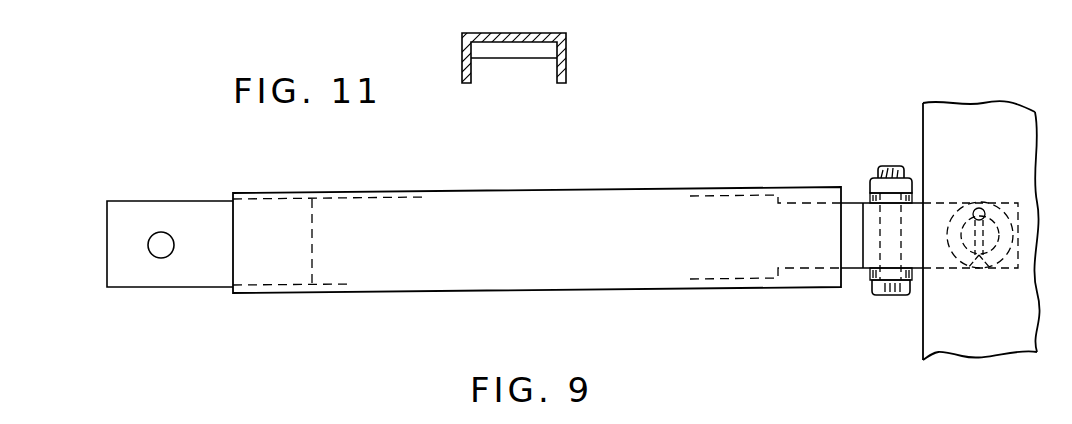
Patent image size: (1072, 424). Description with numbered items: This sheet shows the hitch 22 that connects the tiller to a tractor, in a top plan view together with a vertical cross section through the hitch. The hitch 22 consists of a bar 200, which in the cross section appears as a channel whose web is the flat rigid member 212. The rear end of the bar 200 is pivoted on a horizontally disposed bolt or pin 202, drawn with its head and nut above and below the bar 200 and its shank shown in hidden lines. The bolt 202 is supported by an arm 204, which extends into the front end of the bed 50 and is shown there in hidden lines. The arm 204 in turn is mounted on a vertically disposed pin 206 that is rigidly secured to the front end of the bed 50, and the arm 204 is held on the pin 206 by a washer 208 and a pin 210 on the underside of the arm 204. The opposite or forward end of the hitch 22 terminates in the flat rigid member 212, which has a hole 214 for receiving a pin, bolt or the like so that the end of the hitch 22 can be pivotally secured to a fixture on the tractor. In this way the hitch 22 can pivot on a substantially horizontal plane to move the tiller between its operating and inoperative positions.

In FIG. 9, the hitch 22 is at (443, 186).
In FIG. 9, the bed 50 is at (997, 120).
In FIG. 11, the bar 200 is at (462, 76).
In FIG. 9, the bar 200 is at (560, 200).
In FIG. 9, the bolt or pin 202 is at (885, 295).
In FIG. 9, the arm 204 is at (913, 258).
In FIG. 9, the pin 206 is at (969, 206).
In FIG. 9, the washer 208 is at (1008, 253).
In FIG. 9, the pin 210 is at (1010, 195).
In FIG. 11, the flat rigid member 212 is at (493, 58).
In FIG. 9, the flat rigid member 212 is at (174, 178).
In FIG. 9, the hole 214 is at (161, 259).